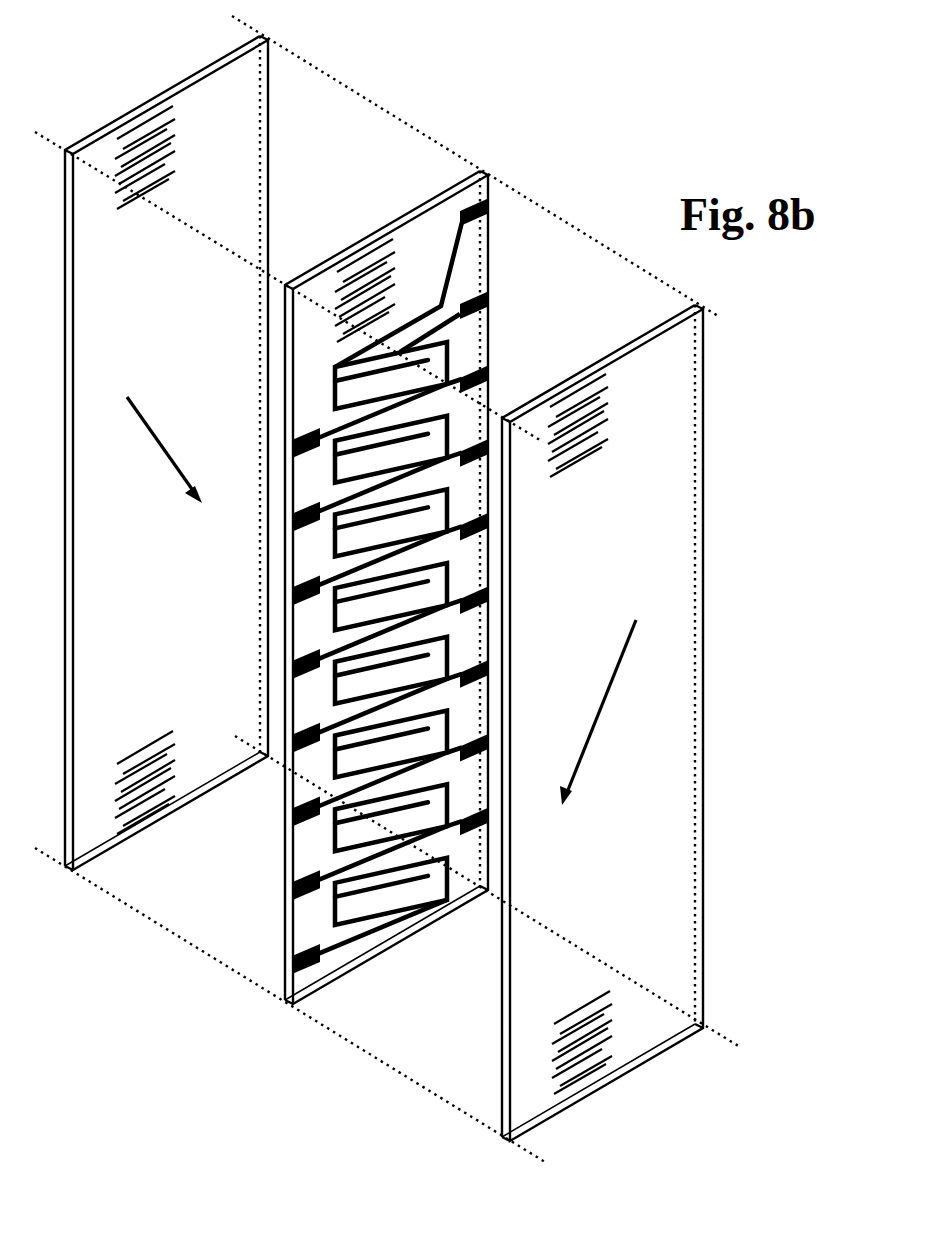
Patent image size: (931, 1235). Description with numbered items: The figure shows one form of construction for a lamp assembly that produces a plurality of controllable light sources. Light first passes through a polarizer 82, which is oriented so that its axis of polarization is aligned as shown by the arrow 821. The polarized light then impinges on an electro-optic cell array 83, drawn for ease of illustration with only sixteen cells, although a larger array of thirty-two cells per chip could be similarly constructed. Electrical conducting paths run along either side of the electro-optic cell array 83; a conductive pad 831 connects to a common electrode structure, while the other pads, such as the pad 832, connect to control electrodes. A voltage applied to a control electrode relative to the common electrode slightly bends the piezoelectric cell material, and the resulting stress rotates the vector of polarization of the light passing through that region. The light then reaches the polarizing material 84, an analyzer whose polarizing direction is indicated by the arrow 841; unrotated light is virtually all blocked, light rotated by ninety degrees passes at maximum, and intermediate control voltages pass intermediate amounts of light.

The polarizer 82 is at (271, 38).
The arrow 821 is at (165, 443).
The electro-optic cell array 83 is at (417, 559).
The conductive pad 831 is at (487, 204).
The pad 832 is at (487, 298).
The polarizing material 84 is at (704, 307).
The arrow 841 is at (607, 700).